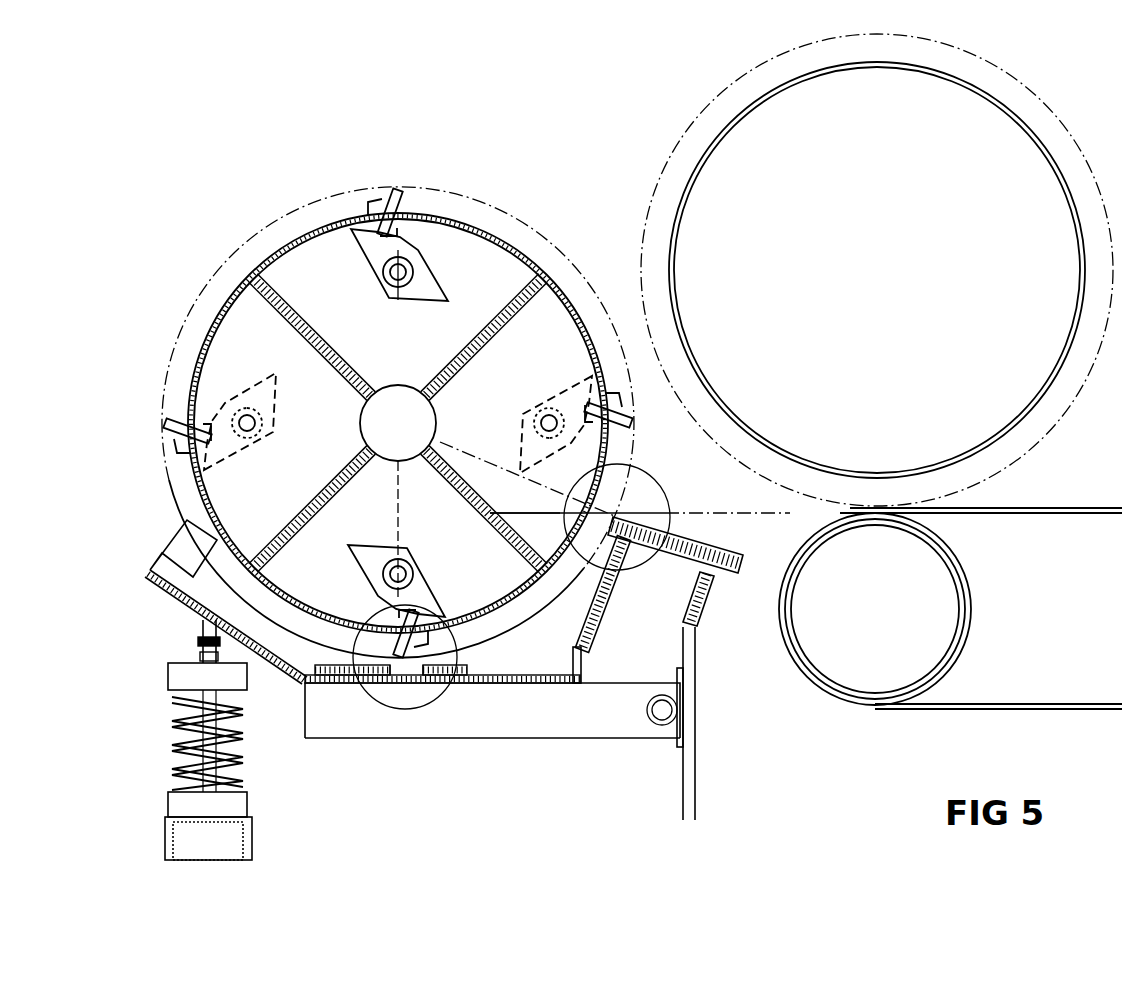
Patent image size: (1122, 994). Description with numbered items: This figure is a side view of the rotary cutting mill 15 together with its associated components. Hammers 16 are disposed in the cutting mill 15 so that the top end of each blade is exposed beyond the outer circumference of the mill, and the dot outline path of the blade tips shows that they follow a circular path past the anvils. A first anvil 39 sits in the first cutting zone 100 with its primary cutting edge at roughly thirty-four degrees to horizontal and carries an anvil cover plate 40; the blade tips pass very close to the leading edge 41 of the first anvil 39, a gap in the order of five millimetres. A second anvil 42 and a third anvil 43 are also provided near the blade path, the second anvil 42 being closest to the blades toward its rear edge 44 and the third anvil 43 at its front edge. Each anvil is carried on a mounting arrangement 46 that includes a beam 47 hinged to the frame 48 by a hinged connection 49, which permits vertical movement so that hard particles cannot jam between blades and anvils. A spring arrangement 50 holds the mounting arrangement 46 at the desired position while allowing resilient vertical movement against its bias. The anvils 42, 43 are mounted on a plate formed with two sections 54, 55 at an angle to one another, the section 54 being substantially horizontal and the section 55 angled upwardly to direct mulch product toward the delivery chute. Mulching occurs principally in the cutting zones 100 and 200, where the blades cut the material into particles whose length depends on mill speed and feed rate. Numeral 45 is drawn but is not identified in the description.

The cutting mill 15 is at (244, 197).
The hammer 16 is at (427, 280).
The first anvil 39 is at (657, 537).
The anvil cover plate 40 is at (715, 538).
The leading edge 41 is at (610, 518).
The second anvil 42 is at (463, 672).
The third anvil 43 is at (343, 686).
The rear edge 44 is at (415, 683).
The anvil mount 45 is at (405, 683).
The mounting arrangement 46 is at (567, 705).
The beam 47 is at (458, 720).
The frame 48 is at (697, 780).
The hinged connection 49 is at (673, 708).
The spring arrangement 50 is at (164, 748).
The section 54 is at (323, 688).
The section 55 is at (198, 642).
The first cutting zone 100 is at (655, 485).
The cutting zone 200 is at (447, 687).